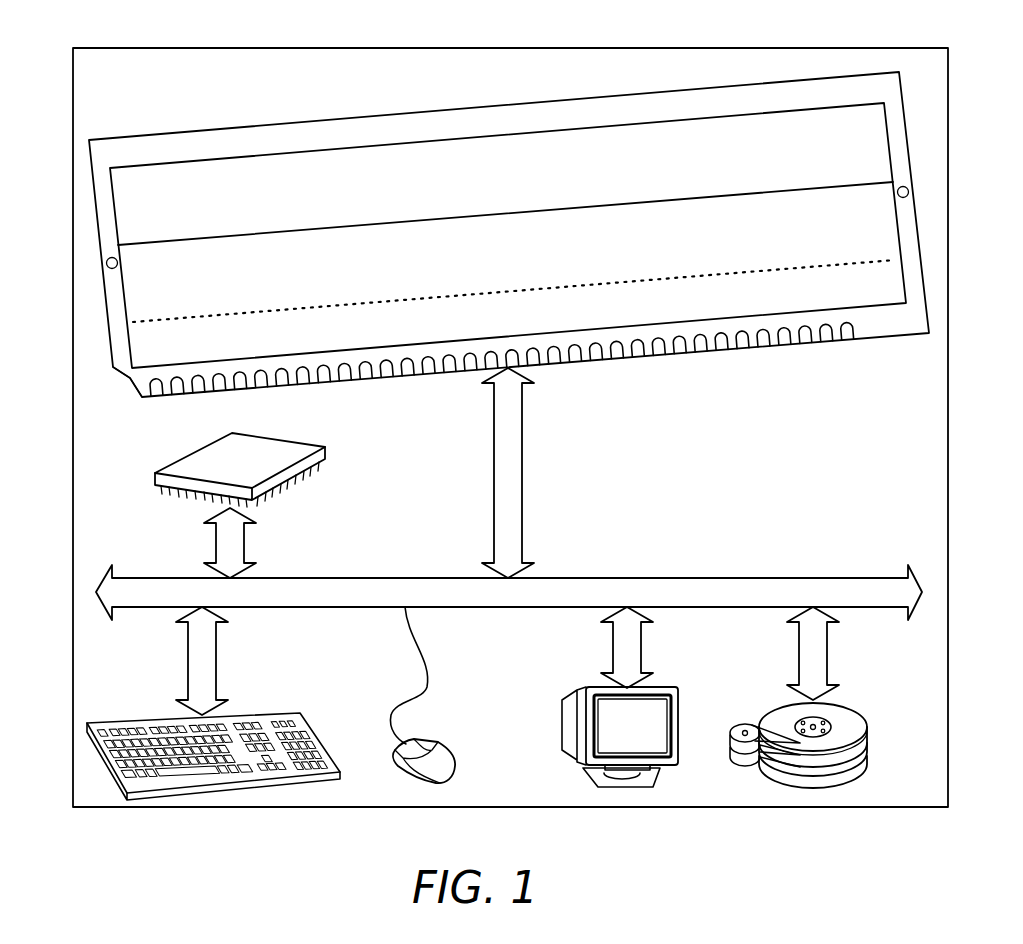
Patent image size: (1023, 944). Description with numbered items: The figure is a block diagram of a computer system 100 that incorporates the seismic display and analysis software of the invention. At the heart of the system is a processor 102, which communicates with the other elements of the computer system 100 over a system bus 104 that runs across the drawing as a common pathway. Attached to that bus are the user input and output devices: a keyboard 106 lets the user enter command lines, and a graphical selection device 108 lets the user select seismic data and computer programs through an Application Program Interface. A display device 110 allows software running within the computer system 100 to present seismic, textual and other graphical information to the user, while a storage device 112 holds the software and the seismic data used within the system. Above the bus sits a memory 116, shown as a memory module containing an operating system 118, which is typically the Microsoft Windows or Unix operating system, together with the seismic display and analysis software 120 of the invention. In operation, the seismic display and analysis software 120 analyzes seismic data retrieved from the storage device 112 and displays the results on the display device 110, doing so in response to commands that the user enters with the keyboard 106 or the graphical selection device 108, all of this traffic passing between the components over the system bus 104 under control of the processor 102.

The computer system 100 is at (183, 807).
The processor 102 is at (325, 447).
The system bus 104 is at (370, 577).
The keyboard 106 is at (307, 688).
The graphical selection device 108 is at (443, 735).
The display device 110 is at (678, 713).
The storage device 112 is at (847, 710).
The memory 116 is at (308, 120).
The operating system 118 is at (134, 378).
The seismic display and analysis software 120 is at (490, 213).